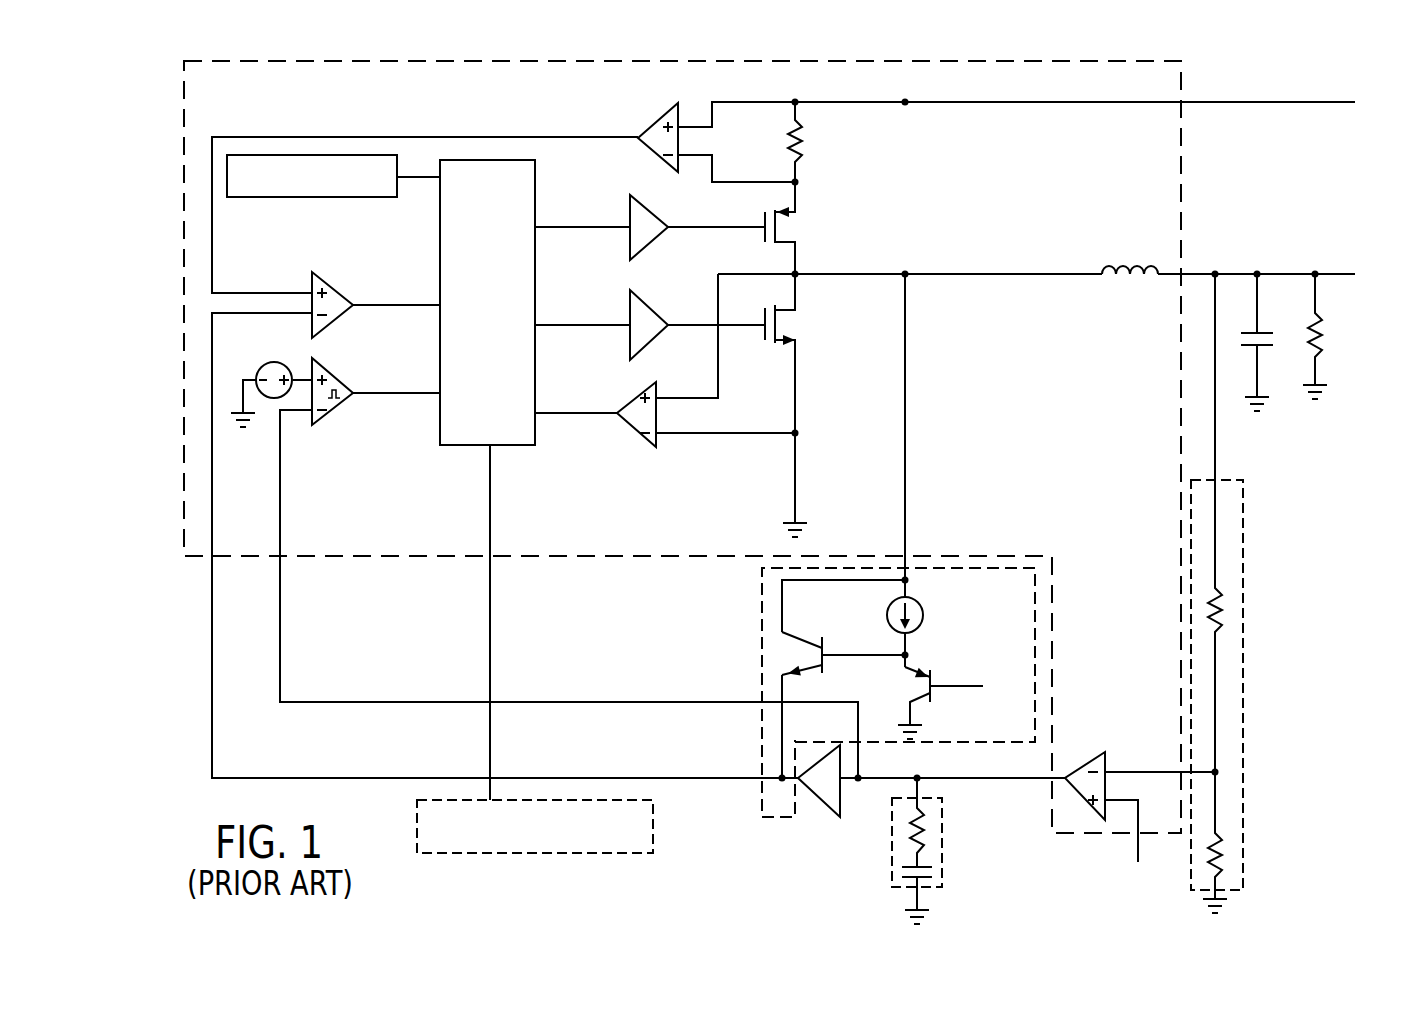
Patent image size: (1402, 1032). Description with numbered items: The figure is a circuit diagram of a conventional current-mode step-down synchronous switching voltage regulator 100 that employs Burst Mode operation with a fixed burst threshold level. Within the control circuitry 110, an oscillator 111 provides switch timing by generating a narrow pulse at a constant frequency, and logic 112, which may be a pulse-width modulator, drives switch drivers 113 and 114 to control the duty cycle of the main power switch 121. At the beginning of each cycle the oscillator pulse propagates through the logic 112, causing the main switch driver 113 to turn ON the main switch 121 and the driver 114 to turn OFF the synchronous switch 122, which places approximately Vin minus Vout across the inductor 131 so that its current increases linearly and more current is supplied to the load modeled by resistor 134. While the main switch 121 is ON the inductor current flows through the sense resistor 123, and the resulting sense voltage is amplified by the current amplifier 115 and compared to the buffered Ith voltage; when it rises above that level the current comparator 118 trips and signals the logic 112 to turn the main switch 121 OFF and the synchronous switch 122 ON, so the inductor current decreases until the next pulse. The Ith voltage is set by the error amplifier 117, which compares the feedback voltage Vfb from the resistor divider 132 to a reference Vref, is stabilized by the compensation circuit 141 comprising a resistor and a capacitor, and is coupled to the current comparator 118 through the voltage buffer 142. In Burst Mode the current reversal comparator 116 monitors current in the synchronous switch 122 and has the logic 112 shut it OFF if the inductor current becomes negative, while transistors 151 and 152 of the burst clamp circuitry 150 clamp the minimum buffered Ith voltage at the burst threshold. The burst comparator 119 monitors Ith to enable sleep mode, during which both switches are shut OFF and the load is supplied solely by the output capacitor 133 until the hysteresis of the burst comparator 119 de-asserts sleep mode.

The switching voltage regulator 100 is at (707, 898).
The control circuitry 110 is at (1181, 190).
The oscillator 111 is at (288, 155).
The logic 112 is at (467, 160).
The main switch driver 113 is at (650, 212).
The switch driver 114 is at (638, 297).
The current amplifier 115 is at (648, 150).
The current reversal comparator 116 is at (634, 399).
The error amplifier 117 is at (1085, 799).
The current comparator 118 is at (333, 322).
The burst comparator 119 is at (335, 407).
The main power switch 121 is at (792, 227).
The synchronous switch 122 is at (790, 325).
The sense resistor 123 is at (805, 143).
The inductor 131 is at (1102, 257).
The resistor divider 132 is at (1243, 608).
The output capacitor 133 is at (1262, 350).
The resistor 134 is at (1320, 360).
The compensation circuit 141 is at (945, 843).
The voltage buffer 142 is at (822, 800).
The burst clamp circuitry 150 is at (869, 545).
The transistor 151 is at (925, 683).
The transistor 152 is at (820, 655).